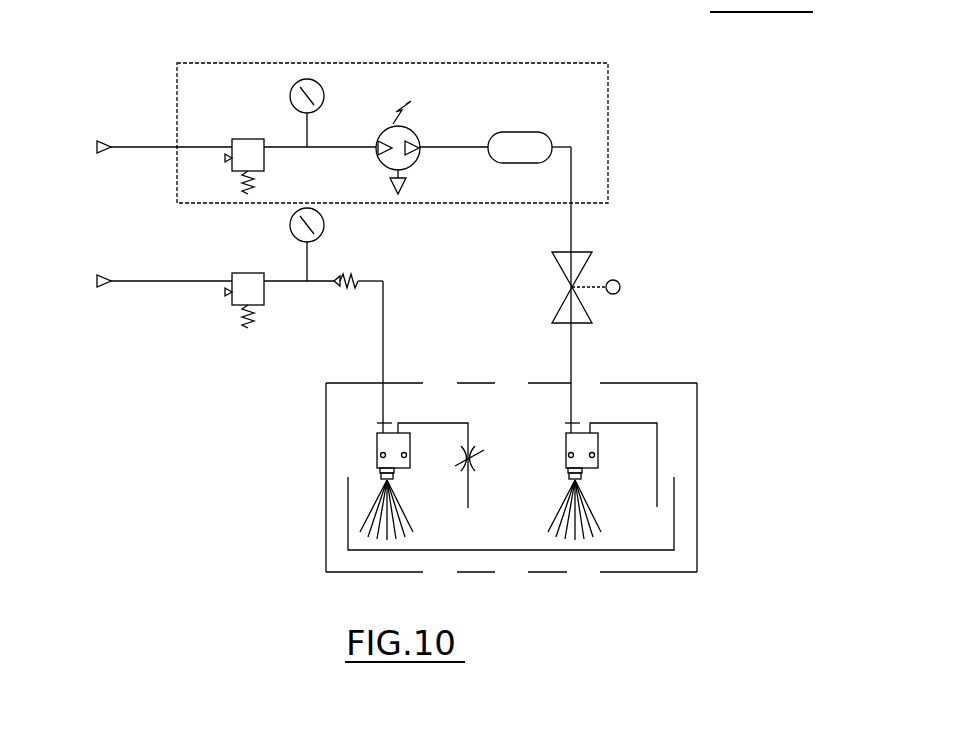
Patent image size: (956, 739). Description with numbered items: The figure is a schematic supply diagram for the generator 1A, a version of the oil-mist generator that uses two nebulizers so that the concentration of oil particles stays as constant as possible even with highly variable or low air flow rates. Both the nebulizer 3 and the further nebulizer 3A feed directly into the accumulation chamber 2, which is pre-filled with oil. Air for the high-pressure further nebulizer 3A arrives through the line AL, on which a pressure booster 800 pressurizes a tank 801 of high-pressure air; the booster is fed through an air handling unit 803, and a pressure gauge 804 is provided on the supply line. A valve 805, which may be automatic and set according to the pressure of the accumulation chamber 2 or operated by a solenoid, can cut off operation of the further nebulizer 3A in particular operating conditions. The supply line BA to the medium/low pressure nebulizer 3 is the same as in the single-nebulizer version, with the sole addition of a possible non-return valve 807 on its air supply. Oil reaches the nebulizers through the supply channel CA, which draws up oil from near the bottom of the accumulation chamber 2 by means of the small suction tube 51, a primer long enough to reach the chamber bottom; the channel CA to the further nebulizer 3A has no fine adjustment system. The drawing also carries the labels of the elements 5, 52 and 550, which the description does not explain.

The air handling unit 803 is at (245, 150).
The pressure gauge 804 is at (311, 96).
The pressure booster 800 is at (404, 136).
The tank 801 is at (522, 146).
The valve 805 is at (622, 267).
The non-return valve 807 is at (352, 273).
The regulator assembly 5 is at (312, 327).
The nebulizer 3 is at (395, 450).
The further nebulizer 3A is at (582, 445).
The valve 52 is at (480, 450).
The small suction tube 51 is at (468, 497).
The inlet 550 is at (568, 382).
The accumulation chamber 2 is at (676, 535).
The generator 1A is at (699, 378).
The line AL is at (572, 228).
The supply line BA is at (383, 343).
The supply channel CA is at (437, 423).